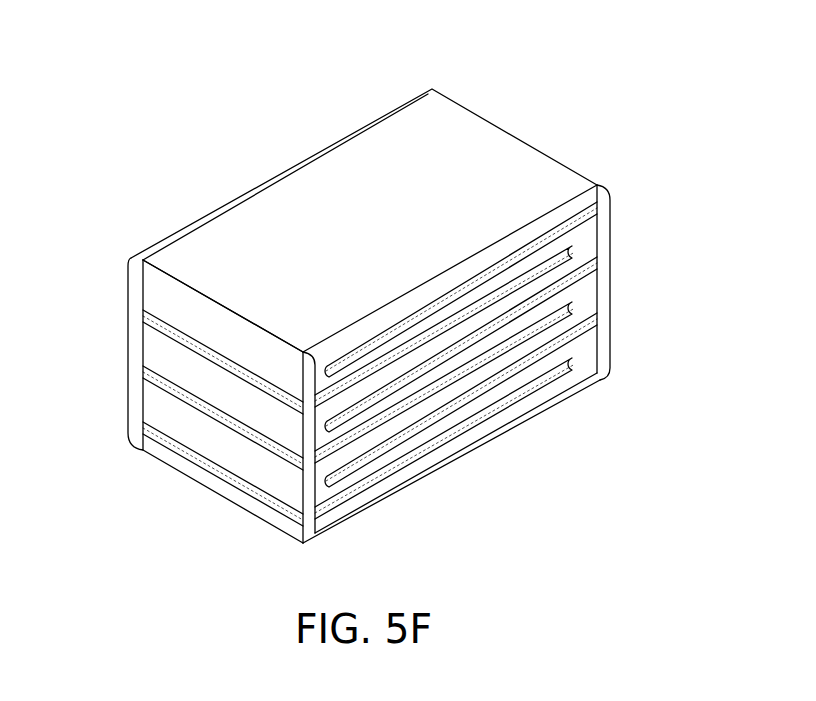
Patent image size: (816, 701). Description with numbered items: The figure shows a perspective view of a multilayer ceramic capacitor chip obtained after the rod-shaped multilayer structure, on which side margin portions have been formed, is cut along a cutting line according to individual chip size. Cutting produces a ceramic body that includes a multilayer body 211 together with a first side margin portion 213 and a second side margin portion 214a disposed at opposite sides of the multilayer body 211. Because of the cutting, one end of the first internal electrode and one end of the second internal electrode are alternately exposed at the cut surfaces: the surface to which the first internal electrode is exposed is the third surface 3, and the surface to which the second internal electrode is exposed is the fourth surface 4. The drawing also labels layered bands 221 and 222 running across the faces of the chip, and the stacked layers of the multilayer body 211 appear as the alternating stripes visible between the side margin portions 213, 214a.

The multilayer body 211 is at (482, 138).
The fourth surface 4 is at (580, 141).
The first side margin portion 213 is at (128, 259).
The second external electrode 222 is at (613, 240).
The first external electrode 221 is at (233, 482).
The third surface 3 is at (161, 488).
The second side margin portion 214a is at (403, 473).